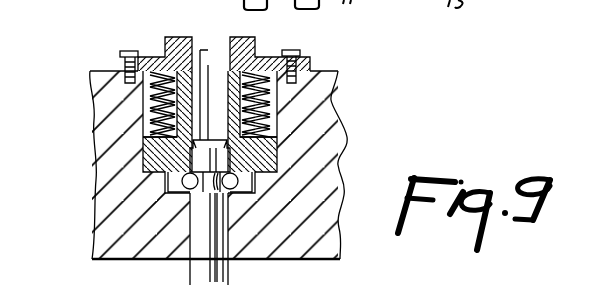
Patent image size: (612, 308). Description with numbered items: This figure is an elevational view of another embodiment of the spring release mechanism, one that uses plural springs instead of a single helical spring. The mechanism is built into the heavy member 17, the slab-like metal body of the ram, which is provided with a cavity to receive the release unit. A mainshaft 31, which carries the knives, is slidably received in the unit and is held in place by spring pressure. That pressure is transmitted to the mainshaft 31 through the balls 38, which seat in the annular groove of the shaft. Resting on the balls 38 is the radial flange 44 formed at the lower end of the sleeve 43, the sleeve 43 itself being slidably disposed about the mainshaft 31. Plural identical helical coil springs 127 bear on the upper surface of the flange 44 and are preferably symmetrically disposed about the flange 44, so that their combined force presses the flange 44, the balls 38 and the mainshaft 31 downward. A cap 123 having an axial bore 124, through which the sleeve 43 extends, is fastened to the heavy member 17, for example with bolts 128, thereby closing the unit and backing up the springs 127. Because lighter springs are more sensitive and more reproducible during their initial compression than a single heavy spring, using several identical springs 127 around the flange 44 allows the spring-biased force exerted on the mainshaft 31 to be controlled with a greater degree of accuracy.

The heavy member 17 is at (107, 230).
The mainshaft 31 is at (228, 270).
The balls 38 is at (238, 186).
The sleeve 43 is at (190, 92).
The radial flange 44 is at (148, 148).
The cap 123 is at (165, 43).
The axial bore 124 is at (209, 33).
The helical coil springs 127 is at (192, 108).
The bolts 128 is at (122, 53).